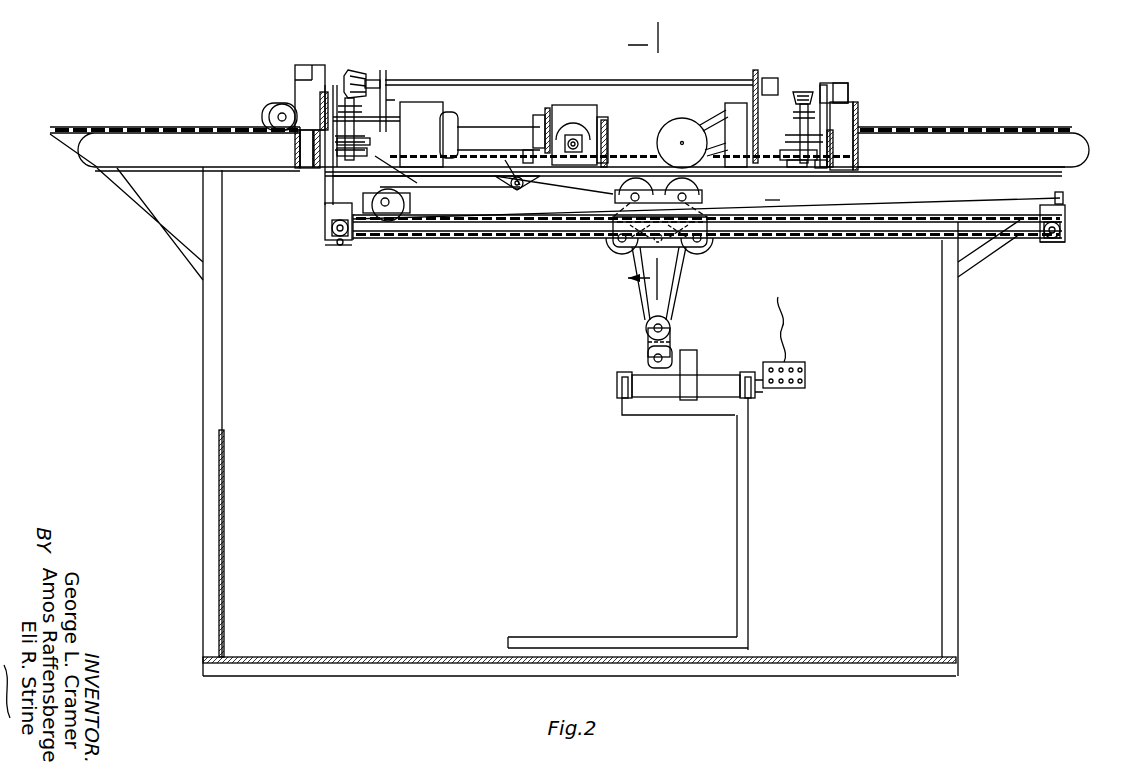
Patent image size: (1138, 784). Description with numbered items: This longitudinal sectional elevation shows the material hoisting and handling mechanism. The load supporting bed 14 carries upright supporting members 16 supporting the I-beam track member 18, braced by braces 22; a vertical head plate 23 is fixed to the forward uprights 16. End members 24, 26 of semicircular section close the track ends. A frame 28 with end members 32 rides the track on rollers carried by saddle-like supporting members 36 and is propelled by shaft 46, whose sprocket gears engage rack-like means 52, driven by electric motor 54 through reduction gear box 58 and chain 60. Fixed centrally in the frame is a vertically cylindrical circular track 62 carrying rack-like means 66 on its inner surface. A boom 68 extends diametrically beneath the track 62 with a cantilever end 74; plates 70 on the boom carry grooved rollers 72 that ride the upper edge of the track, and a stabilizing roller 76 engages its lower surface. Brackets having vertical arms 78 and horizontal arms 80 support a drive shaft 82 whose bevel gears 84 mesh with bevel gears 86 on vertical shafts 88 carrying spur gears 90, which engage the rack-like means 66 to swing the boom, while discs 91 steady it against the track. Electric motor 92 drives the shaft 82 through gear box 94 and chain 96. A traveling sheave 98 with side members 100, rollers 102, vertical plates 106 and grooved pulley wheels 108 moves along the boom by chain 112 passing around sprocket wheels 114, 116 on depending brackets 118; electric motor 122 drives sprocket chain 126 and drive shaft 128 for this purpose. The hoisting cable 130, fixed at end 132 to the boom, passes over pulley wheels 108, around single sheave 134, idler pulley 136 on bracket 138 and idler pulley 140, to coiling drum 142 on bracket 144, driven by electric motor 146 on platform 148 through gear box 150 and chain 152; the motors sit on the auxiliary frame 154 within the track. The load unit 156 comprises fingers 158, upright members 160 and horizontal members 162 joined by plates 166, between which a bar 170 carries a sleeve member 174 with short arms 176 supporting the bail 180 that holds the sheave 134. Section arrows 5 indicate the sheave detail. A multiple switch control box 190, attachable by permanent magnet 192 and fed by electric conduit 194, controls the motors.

The section line of FIG. 5 is at (650, 162).
The load supporting bed 14 is at (787, 668).
The upright supporting members 16 is at (222, 390).
The track member 18 is at (155, 148).
The braces 22 is at (163, 237).
The vertical head plate 23 is at (226, 535).
The end member 24 is at (73, 153).
The end member 26 is at (1091, 147).
The frame 28 is at (860, 148).
The end members of frame 32 is at (294, 165).
The saddle-like supporting members 36 is at (846, 108).
The shaft 46 is at (275, 116).
The rack-like means 52 is at (963, 127).
The electric motor 54 is at (310, 92).
The reduction gear box 58 is at (308, 68).
The chain 60 is at (282, 103).
The circular track 62 is at (320, 168).
The rack-like means 66 is at (322, 152).
The boom 68 is at (773, 200).
The supporting plates 70 is at (336, 105).
The rollers 72 is at (325, 92).
The cantilever end of boom 74 is at (1057, 183).
The stabilizing roller 76 is at (322, 200).
The vertical arm 78 is at (350, 120).
The horizontal arm 80 is at (397, 115).
The drive shaft 82 is at (541, 112).
The bevel gears 84 is at (372, 92).
The bevel gears 86 is at (349, 88).
The vertical shafts 88 is at (385, 112).
The spur gears 90 is at (365, 160).
The stabilizing circular discs 91 is at (375, 155).
The electric motor 92 is at (680, 130).
The gear box 94 is at (730, 105).
The chain 96 is at (756, 100).
The traveling sheave 98 is at (613, 198).
The side members 100 is at (633, 252).
The rollers 102 is at (622, 184).
The vertical plates 106 is at (680, 250).
The grooved pulley wheels 108 is at (613, 247).
The sprocket chain 112 is at (880, 222).
The sprocket wheel 114 is at (1045, 245).
The sprocket wheel 116 is at (327, 250).
The depending brackets 118 is at (330, 214).
The electric motor 122 is at (440, 127).
The sprocket chain 126 is at (355, 242).
The drive shaft 128 is at (340, 243).
The hoisting cable 130 is at (950, 217).
The cable end 132 is at (1063, 198).
The single sheave 134 is at (667, 323).
The idler pulley 136 is at (385, 215).
The bracket 138 is at (405, 212).
The idler pulley 140 is at (505, 190).
The coiling drum 142 is at (577, 133).
The bracket 144 is at (528, 163).
The electric motor 146 is at (607, 125).
The platform 148 is at (503, 125).
The gear box 150 is at (590, 105).
The chain 152 is at (546, 107).
The auxiliary frame 154 is at (507, 173).
The unit 156 is at (752, 519).
The fingers 158 is at (588, 647).
The upright members 160 is at (748, 485).
The horizontal members 162 is at (693, 410).
The plates 166 is at (622, 388).
The bar 170 is at (707, 388).
The sleeve member 174 is at (690, 375).
The short arms 176 is at (667, 367).
The bail 180 is at (648, 333).
The multiple switch control box 190 is at (807, 377).
The permanent magnet 192 is at (762, 377).
The compound electric conduit 194 is at (785, 332).